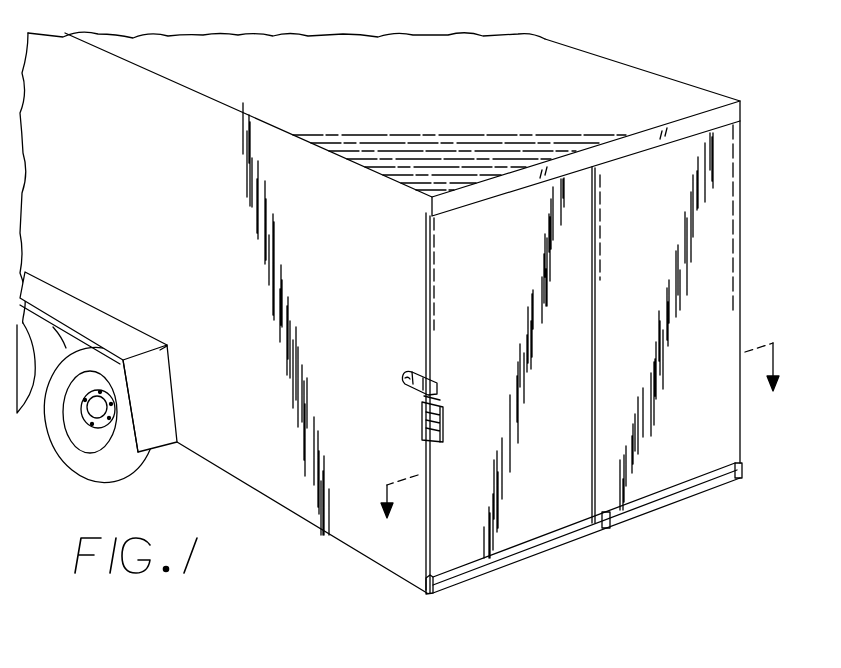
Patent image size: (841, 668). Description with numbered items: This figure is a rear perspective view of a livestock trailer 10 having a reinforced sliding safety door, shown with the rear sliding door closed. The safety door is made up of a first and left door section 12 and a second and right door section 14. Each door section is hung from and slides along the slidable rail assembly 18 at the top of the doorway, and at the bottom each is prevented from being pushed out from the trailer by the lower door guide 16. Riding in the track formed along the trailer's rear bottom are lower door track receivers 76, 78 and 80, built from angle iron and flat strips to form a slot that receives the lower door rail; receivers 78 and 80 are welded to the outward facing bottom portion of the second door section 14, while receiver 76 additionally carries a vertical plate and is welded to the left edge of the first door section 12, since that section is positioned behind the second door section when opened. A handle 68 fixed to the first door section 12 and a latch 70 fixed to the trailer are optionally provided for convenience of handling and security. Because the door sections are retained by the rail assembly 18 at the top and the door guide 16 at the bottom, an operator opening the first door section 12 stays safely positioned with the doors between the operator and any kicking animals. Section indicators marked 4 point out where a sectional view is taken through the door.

The livestock trailer 10 is at (735, 97).
The first door section 12 is at (533, 523).
The second door section 14 is at (680, 472).
The lower door guide 16 is at (473, 577).
The slidable rail assembly 18 is at (730, 116).
The handle 68 is at (423, 427).
The latch 70 is at (410, 382).
The lower door track receiver 76 is at (430, 597).
The lower door track receiver 78 is at (607, 530).
The lower door track receiver 80 is at (743, 473).
The section line 4- 4 is at (580, 449).